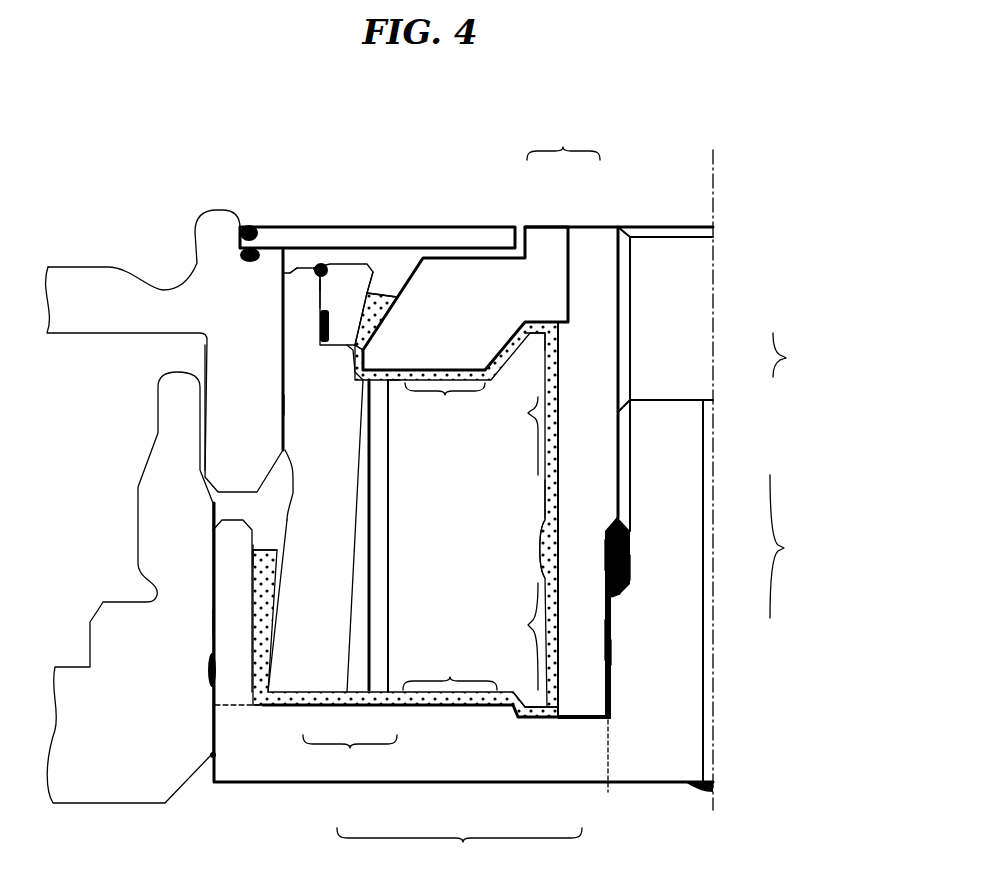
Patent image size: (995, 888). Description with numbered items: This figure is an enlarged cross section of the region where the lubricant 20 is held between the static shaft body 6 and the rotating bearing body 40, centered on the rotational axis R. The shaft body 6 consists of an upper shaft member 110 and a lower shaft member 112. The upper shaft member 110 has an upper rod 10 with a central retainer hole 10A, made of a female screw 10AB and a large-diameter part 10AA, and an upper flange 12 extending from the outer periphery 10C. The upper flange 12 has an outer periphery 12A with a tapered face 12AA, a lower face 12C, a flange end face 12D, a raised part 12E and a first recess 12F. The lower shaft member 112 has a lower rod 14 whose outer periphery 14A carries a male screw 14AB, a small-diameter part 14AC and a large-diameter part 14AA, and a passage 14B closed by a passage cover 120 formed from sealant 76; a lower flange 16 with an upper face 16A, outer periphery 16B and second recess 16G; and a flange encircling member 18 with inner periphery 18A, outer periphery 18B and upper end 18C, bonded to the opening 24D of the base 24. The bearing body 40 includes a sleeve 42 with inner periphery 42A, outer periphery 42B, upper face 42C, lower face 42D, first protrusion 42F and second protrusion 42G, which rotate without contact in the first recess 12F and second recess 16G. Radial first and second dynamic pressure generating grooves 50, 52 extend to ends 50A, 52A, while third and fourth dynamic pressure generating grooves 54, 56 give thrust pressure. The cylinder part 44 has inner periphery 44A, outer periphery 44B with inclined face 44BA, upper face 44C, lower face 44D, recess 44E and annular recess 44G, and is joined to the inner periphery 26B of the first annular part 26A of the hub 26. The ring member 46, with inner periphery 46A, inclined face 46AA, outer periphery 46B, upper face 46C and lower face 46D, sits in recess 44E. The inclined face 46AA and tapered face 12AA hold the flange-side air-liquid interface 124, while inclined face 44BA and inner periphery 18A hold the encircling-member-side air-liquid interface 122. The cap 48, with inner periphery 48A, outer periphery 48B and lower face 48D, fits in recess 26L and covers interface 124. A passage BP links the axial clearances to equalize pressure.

The shaft body 6 is at (652, 743).
The upper rod 10 is at (585, 240).
The retainer hole 10A is at (797, 355).
The large-diameter part 10AA is at (603, 567).
The female screw 10AB is at (604, 330).
The outer periphery 10C is at (591, 638).
The upper flange 12 is at (535, 240).
The outer periphery 12A is at (366, 362).
The tapered face 12AA is at (388, 320).
The lower face 12C is at (461, 366).
The flange end face 12D is at (441, 258).
The raised part 12E is at (497, 268).
The first recess 12F is at (527, 320).
The lower rod 14 is at (650, 682).
The outer periphery 14A is at (798, 546).
The large-diameter part 14AA is at (612, 653).
The male screw 14AB is at (618, 465).
The small-diameter part 14AC is at (630, 568).
The passage 14B is at (704, 420).
The lower flange 16 is at (487, 743).
The upper face 16A is at (450, 708).
The outer periphery 16B is at (225, 720).
The second recess 16G is at (547, 719).
The flange encircling member 18 is at (240, 668).
The inner periphery 18A is at (214, 665).
The outer periphery 18B is at (226, 598).
The upper end 18C is at (253, 553).
The lubricant 20 is at (539, 545).
The base 24 is at (145, 750).
The opening 24D is at (210, 622).
The hub 26 is at (97, 280).
The first annular part 26A is at (225, 362).
The inner periphery 26B is at (281, 390).
The recess 26L is at (232, 242).
The bearing body 40 is at (350, 756).
The sleeve 42 is at (398, 653).
The inner periphery 42A is at (545, 506).
The outer periphery 42B is at (373, 568).
The upper face 42C is at (396, 382).
The lower face 42D is at (513, 705).
The first protrusion 42F is at (529, 335).
The second protrusion 42G is at (531, 710).
The cylinder part 44 is at (330, 679).
The inner periphery 44A is at (369, 498).
The outer periphery 44B is at (287, 404).
The inclined face 44BA is at (278, 616).
The upper face 44C is at (296, 272).
The lower face 44D is at (301, 692).
The recess 44E is at (306, 310).
The annular recess 44G is at (352, 371).
The ring member 46 is at (352, 693).
The inner periphery 46A is at (367, 292).
The inclined face 46AA is at (393, 298).
The outer periphery 46B is at (327, 288).
The upper face 46C is at (350, 266).
The lower face 46D is at (320, 341).
The cap 48 is at (304, 240).
The inner periphery 48A is at (510, 240).
The outer periphery 48B is at (258, 230).
The lower face 48D is at (386, 248).
The first dynamic pressure generating groove 50 is at (518, 636).
The end 50A is at (560, 700).
The second dynamic pressure generating groove 52 is at (518, 436).
The end 52A is at (558, 344).
The third dynamic pressure generating groove 54 is at (445, 403).
The fourth dynamic pressure generating groove 56 is at (450, 667).
The sealant 76 is at (619, 597).
The upper shaft member 110 is at (563, 142).
The lower shaft member 112 is at (459, 848).
The passage cover 120 is at (702, 792).
The encircling-member-side air-liquid interface 122 is at (263, 548).
The flange-side air-liquid interface 124 is at (393, 293).
The passage BP is at (378, 543).
The rotational axis R is at (712, 468).